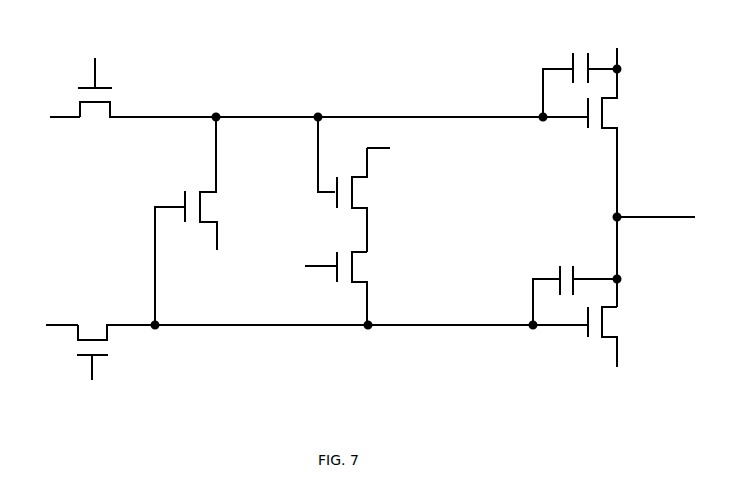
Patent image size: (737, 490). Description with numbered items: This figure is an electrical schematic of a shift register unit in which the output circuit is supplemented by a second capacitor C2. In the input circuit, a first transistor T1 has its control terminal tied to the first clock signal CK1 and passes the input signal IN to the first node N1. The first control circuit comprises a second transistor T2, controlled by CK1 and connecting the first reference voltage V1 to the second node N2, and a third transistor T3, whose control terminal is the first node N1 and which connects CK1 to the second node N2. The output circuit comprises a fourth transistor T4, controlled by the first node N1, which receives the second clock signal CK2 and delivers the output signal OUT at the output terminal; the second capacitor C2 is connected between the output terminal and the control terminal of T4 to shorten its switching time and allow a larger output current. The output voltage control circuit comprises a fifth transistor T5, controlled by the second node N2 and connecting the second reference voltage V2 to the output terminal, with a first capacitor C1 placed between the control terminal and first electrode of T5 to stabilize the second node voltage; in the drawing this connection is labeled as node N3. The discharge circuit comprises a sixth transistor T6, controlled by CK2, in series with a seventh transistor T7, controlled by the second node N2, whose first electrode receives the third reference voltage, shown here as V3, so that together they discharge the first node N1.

The first transistor T1 is at (116, 342).
The second transistor T2 is at (147, 99).
The third transistor T3 is at (189, 221).
The fourth transistor T4 is at (612, 337).
The fifth transistor T5 is at (611, 143).
The sixth transistor T6 is at (345, 288).
The seventh transistor T7 is at (351, 184).
The first capacitor C1 is at (582, 81).
The second capacitor C2 is at (577, 271).
The first node N1 is at (368, 338).
The second node N2 is at (375, 106).
The third node N3 is at (561, 129).
The first clock signal CK1 is at (156, 233).
The second clock signal CK2 is at (460, 320).
The first reference voltage V1 is at (54, 117).
The second reference voltage V2 is at (619, 49).
The third voltage V3 is at (389, 153).
The input signal IN is at (48, 328).
The output signal OUT is at (655, 210).